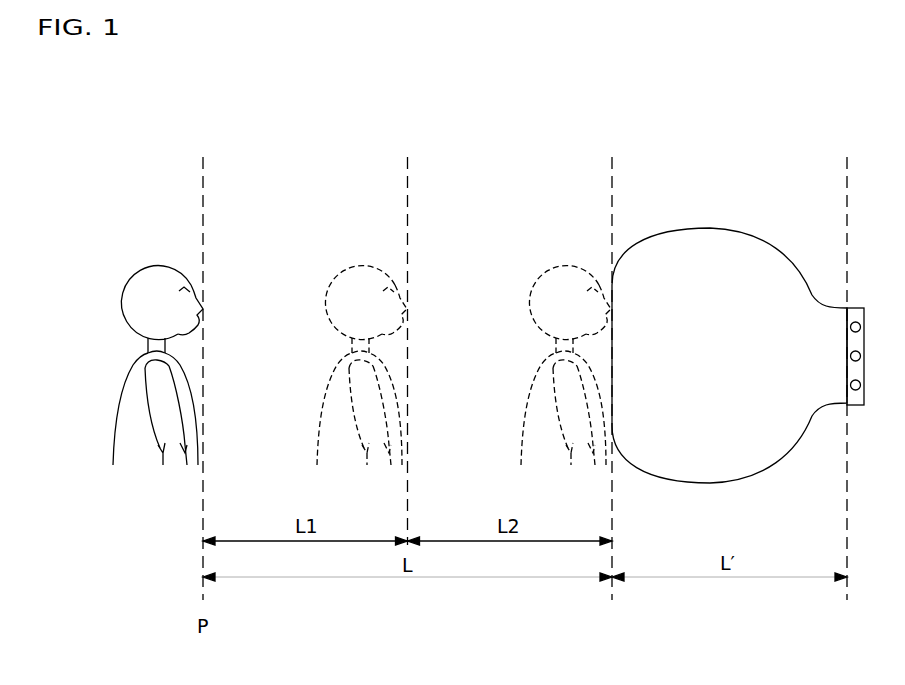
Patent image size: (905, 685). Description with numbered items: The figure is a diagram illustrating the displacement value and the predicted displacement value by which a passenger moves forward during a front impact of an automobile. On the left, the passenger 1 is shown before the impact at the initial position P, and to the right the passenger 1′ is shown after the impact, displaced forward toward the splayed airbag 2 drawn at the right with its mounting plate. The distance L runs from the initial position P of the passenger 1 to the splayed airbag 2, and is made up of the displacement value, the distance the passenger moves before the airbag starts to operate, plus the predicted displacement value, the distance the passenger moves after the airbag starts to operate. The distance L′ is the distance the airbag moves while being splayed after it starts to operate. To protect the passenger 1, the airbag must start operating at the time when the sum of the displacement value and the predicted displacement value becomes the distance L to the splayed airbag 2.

The passenger 1 is at (140, 252).
The passenger after impact 1′ is at (345, 251).
The splayed airbag 2 is at (711, 206).